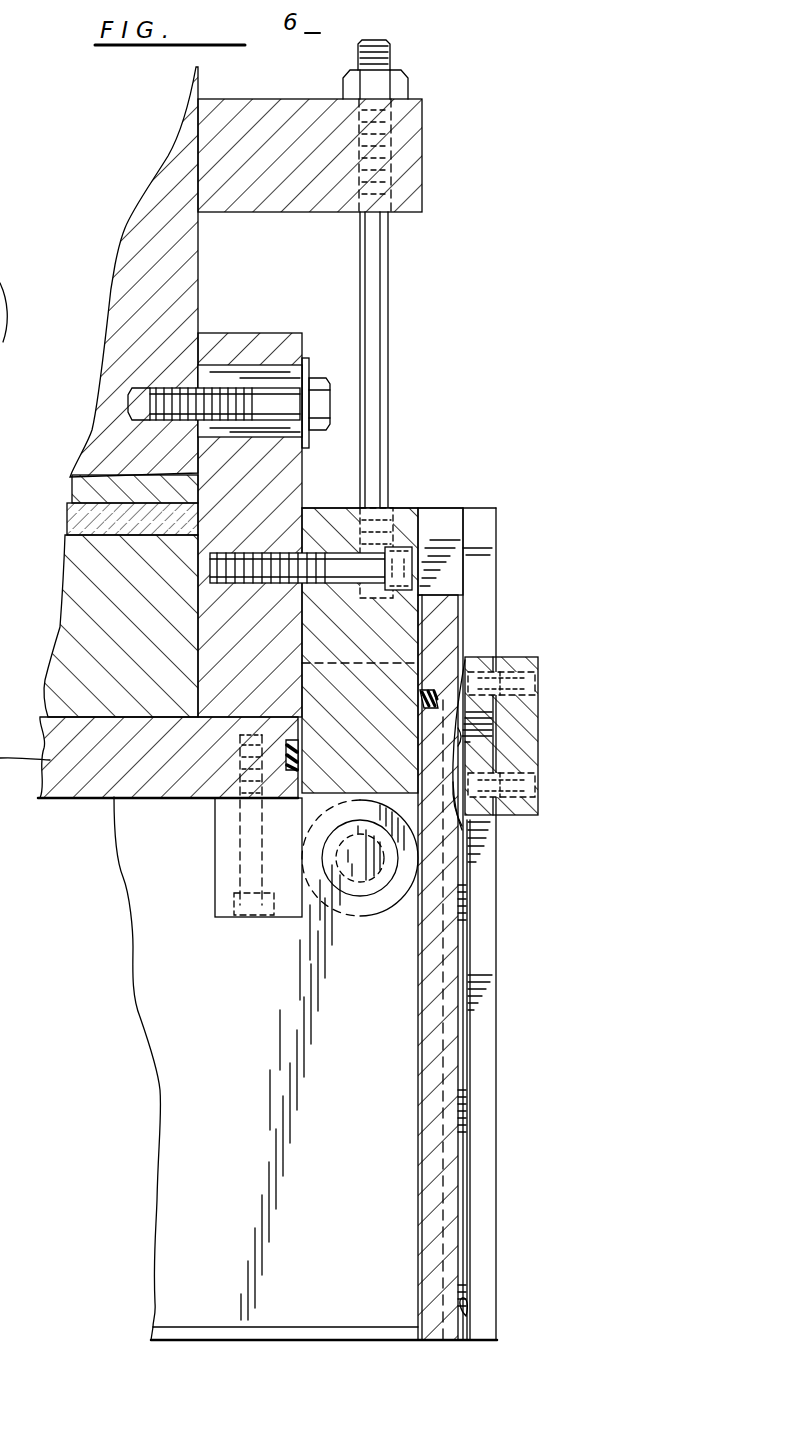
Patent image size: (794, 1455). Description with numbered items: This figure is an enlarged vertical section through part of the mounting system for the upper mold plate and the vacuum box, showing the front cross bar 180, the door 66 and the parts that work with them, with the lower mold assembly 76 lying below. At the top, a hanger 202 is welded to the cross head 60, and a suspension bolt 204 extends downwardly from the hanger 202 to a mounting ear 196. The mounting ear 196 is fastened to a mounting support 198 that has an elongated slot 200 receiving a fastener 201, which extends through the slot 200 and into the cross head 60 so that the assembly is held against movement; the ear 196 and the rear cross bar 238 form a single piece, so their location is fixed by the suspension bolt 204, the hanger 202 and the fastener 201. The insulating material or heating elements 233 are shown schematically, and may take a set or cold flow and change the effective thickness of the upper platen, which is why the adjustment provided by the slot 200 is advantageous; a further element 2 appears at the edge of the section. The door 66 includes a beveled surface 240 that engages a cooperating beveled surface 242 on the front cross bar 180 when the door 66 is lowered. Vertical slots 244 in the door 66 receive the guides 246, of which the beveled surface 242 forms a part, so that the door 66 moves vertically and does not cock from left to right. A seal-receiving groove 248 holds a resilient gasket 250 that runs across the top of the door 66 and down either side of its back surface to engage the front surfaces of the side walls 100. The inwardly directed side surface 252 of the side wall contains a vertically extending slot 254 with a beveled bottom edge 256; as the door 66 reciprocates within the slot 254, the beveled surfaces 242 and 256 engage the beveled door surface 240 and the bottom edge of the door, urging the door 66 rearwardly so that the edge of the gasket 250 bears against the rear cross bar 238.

The frame block 2 is at (75, 626).
The cross head 60 is at (188, 277).
The door 66 is at (445, 988).
The lower mold assembly 76 is at (0, 233).
The side walls 100 is at (390, 1094).
The front cross bar 180 is at (535, 739).
The mounting ears 196 is at (405, 522).
The mounting supports 198 is at (290, 505).
The elongated slots 200 is at (287, 428).
The fasteners 201 is at (318, 385).
The hangers 202 is at (422, 175).
The suspension bolts 204 is at (395, 302).
The insulating material and/or heating elements 233 is at (72, 521).
The rear cross bar 238 is at (375, 677).
The beveled surface 240 is at (462, 735).
The cooperating beveled surface 242 is at (464, 745).
The vertical slots 244 is at (458, 1026).
The guides 246 is at (463, 805).
The seal-receiving groove 248 is at (465, 661).
The resilient gasket 250 is at (316, 826).
The inwardly directed side surfaces 252 is at (482, 1137).
The vertically extending slot 254 is at (445, 527).
The beveled bottom edge 256 is at (466, 1312).